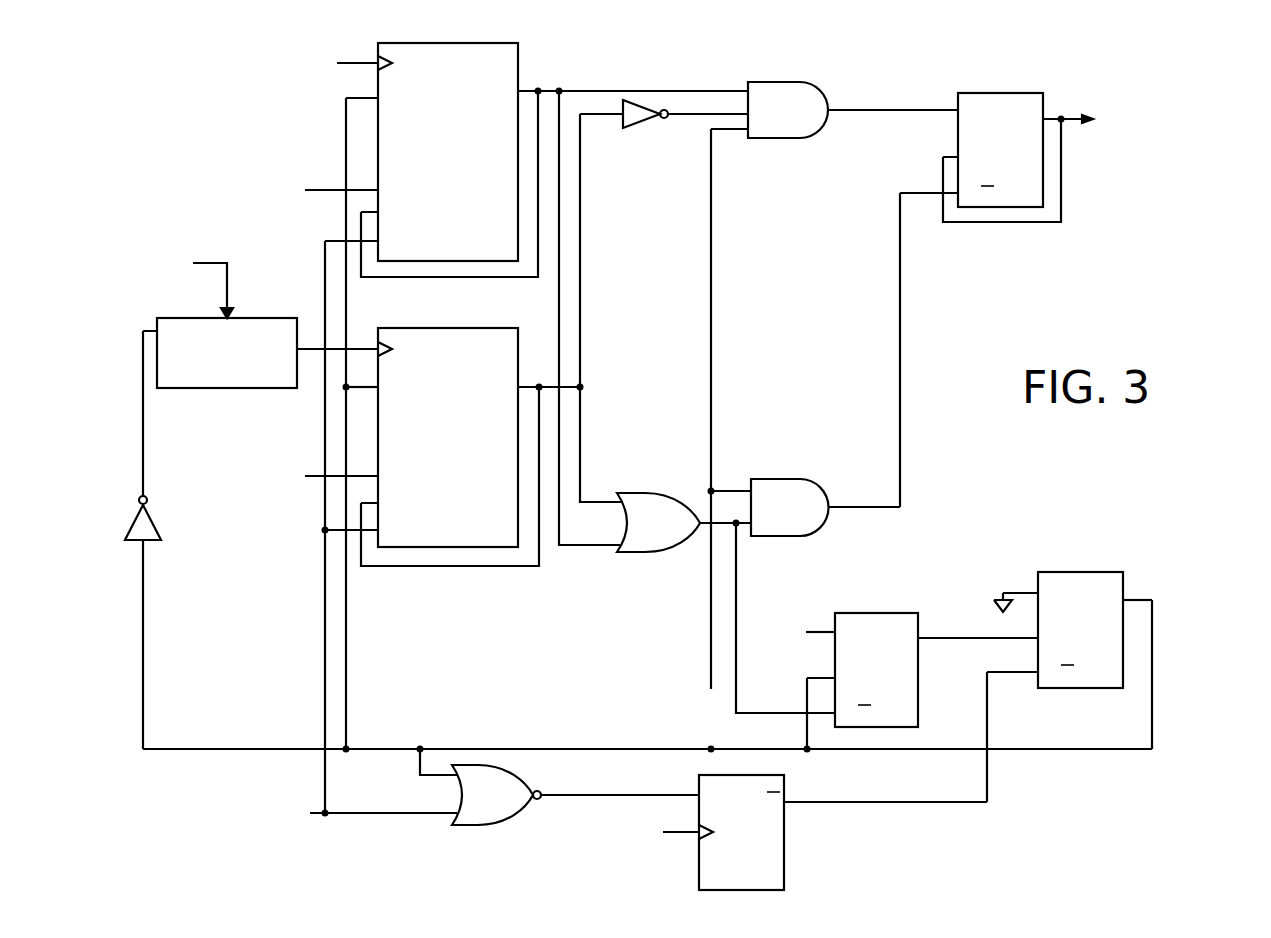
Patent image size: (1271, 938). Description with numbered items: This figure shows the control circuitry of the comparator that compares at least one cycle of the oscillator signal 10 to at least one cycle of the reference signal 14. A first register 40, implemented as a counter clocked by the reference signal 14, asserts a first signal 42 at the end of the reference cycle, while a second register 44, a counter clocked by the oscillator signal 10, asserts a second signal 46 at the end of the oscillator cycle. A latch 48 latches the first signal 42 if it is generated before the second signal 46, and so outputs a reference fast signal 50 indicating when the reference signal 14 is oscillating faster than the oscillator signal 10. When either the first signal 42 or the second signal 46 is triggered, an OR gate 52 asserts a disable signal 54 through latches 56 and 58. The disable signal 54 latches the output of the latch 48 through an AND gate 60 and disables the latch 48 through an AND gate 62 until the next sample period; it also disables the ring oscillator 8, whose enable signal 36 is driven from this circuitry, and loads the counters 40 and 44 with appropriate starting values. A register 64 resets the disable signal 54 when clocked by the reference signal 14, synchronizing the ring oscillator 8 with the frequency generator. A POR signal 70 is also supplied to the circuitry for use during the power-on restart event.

The ring oscillator 8 is at (230, 390).
The oscillator signal 10 is at (308, 352).
The reference signal 14 is at (347, 62).
The enable signal 36 is at (143, 422).
The first register 40 is at (432, 43).
The first signal 42 is at (591, 88).
The second register 44 is at (432, 328).
The second signal 46 is at (541, 385).
The latch 48 is at (1003, 93).
The reference fast signal 50 is at (1066, 116).
The OR gate 52 is at (650, 553).
The disable signal 54 is at (1152, 675).
The latch 56 is at (880, 613).
The latch 58 is at (1083, 572).
The AND gate 60 is at (782, 479).
The AND gate 62 is at (781, 82).
The register 64 is at (784, 860).
The POR signal 70 is at (362, 815).